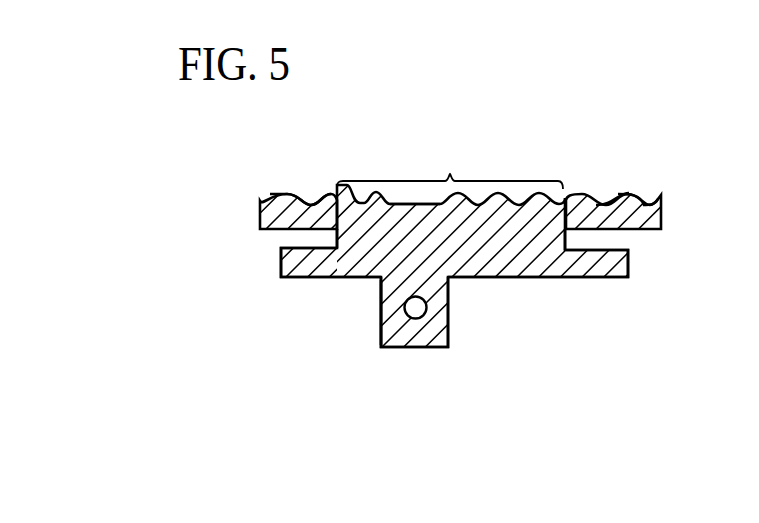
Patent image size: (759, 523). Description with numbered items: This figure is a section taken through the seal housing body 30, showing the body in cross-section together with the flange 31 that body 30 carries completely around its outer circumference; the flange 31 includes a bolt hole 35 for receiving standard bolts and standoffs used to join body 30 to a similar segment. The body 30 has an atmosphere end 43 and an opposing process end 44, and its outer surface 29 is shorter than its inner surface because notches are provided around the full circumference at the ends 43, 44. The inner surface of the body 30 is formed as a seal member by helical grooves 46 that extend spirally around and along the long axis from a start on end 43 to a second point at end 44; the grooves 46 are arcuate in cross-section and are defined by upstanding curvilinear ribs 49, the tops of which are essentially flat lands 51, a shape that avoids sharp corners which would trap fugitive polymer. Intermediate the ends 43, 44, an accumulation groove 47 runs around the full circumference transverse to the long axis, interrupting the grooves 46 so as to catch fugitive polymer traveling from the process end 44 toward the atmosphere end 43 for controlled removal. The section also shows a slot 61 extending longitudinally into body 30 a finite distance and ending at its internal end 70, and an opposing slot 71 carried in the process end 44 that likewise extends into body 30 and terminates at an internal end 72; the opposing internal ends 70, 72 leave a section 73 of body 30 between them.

The outer surface 29 is at (472, 278).
The body 30 is at (450, 282).
The flange 31 is at (378, 311).
The bolt hole 35 is at (417, 281).
The atmosphere end 43 is at (224, 207).
The process end 44 is at (694, 208).
The helical grooves 46 is at (608, 203).
The accumulation groove 47 is at (423, 205).
The curvilinear ribs 49 is at (280, 198).
The flat lands 51 is at (288, 194).
The slot 61 is at (292, 240).
The internal end 70 is at (339, 240).
The opposing slot 71 is at (618, 238).
The internal end 72 is at (565, 243).
The section 73 is at (450, 169).